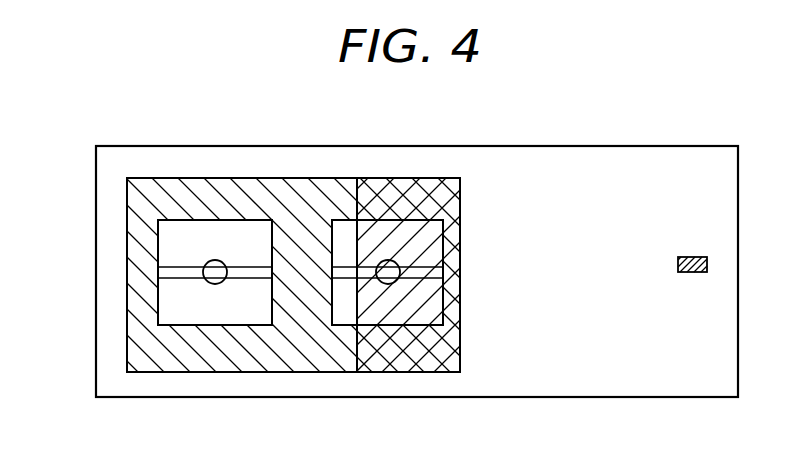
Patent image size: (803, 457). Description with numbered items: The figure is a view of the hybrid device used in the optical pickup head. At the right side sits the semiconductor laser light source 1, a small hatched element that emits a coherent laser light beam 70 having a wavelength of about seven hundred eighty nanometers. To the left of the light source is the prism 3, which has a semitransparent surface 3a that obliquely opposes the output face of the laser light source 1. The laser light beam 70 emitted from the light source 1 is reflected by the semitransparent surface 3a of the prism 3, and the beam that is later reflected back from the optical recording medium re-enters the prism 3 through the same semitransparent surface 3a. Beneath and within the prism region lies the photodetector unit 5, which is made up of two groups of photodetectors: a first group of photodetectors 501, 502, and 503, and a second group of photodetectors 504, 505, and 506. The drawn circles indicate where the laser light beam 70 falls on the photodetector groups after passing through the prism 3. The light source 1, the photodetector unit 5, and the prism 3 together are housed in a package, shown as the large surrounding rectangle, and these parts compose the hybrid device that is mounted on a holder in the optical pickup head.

The semiconductor laser light source 1 is at (707, 265).
The prism 3 is at (203, 190).
The semitransparent surface 3a is at (440, 357).
The photodetector unit 5 is at (253, 210).
The laser light beam 70 is at (215, 284).
The photodetector 501 is at (343, 233).
The photodetector 502 is at (342, 273).
The photodetector 503 is at (345, 317).
The photodetector 504 is at (168, 238).
The photodetector 505 is at (158, 276).
The photodetector 506 is at (175, 310).